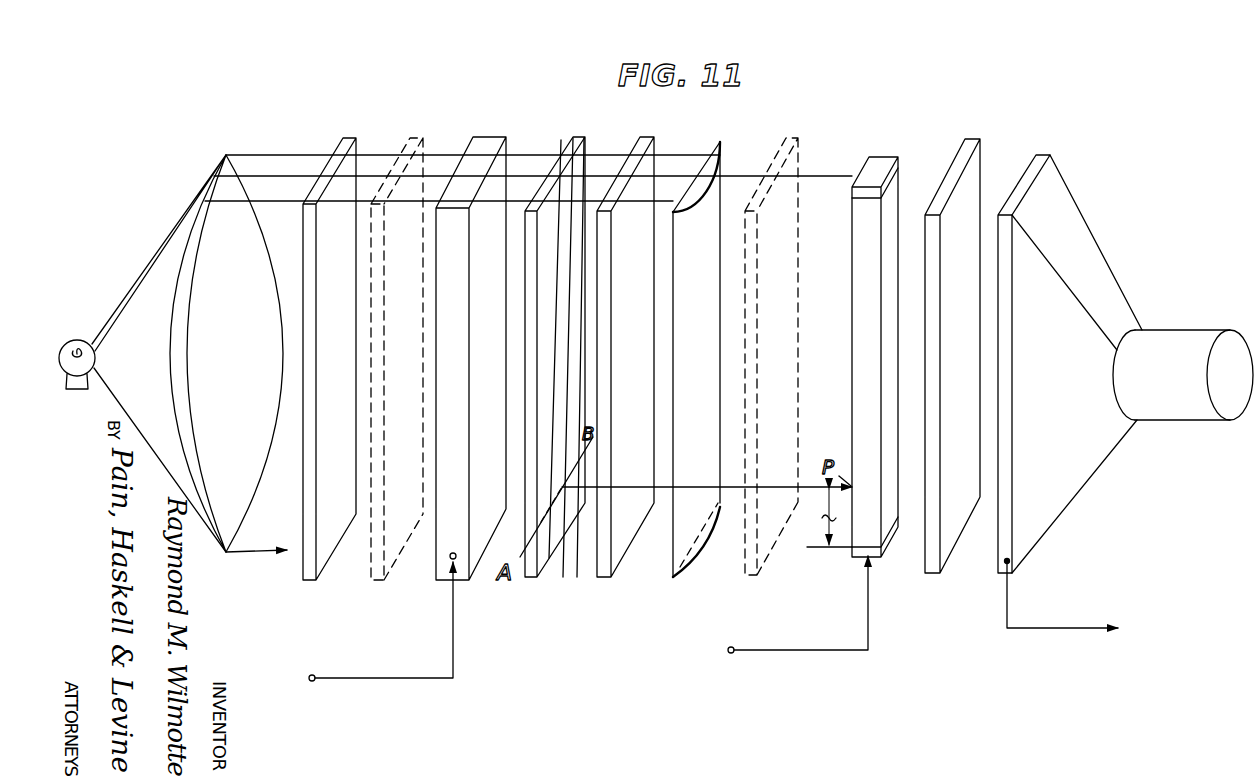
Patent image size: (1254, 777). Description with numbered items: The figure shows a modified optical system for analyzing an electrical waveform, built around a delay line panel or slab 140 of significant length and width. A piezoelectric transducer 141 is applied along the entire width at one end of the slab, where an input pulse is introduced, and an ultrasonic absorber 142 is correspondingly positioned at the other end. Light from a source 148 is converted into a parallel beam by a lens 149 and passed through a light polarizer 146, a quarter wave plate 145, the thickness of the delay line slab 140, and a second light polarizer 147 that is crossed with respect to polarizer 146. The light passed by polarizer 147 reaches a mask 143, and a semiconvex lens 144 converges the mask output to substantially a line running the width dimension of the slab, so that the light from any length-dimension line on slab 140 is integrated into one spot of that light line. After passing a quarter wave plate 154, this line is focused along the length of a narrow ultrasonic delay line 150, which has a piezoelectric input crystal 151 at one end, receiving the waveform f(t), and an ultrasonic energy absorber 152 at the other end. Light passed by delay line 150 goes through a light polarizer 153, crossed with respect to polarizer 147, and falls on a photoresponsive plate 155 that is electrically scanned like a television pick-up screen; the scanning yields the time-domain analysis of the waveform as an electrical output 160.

The delay line panel or slab 140 is at (500, 294).
The piezoelectric transducer 141 is at (442, 540).
The ultrasonic absorber 142 is at (488, 148).
The mask 143 is at (580, 131).
The semiconvex lens 144 is at (729, 132).
The quarter wave plate 145 is at (412, 143).
The light polarizer 146 is at (343, 144).
The light polarizer 147 is at (652, 131).
The light source 148 is at (77, 341).
The lens 149 is at (203, 345).
The narrow ultrasonic delay line 150 is at (866, 283).
The piezoelectric input crystal 151 is at (857, 553).
The ultrasonic energy absorber 152 is at (882, 165).
The light polarizer 153 is at (974, 153).
The quarter wave plate 154 is at (790, 141).
The photoresponsive plate 155 is at (1000, 548).
The electrical output 160 is at (1037, 630).